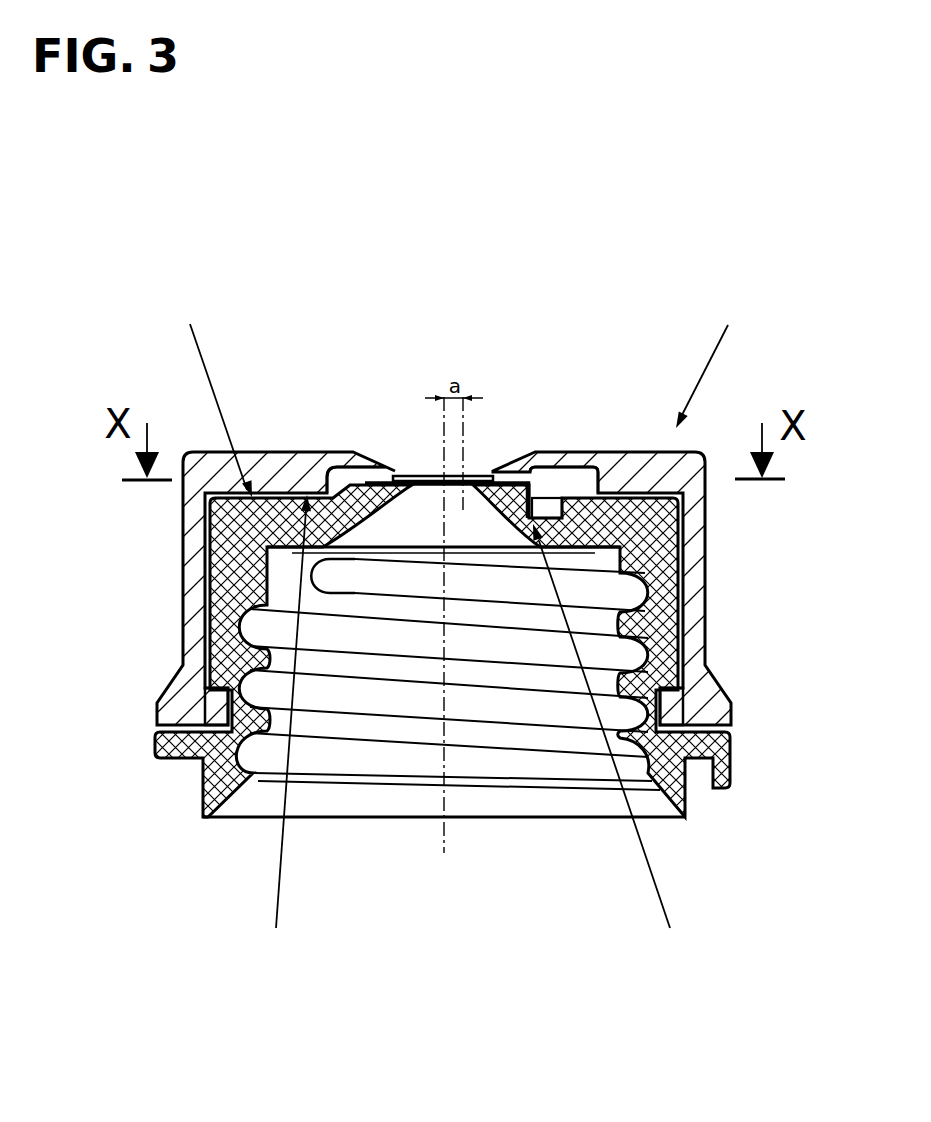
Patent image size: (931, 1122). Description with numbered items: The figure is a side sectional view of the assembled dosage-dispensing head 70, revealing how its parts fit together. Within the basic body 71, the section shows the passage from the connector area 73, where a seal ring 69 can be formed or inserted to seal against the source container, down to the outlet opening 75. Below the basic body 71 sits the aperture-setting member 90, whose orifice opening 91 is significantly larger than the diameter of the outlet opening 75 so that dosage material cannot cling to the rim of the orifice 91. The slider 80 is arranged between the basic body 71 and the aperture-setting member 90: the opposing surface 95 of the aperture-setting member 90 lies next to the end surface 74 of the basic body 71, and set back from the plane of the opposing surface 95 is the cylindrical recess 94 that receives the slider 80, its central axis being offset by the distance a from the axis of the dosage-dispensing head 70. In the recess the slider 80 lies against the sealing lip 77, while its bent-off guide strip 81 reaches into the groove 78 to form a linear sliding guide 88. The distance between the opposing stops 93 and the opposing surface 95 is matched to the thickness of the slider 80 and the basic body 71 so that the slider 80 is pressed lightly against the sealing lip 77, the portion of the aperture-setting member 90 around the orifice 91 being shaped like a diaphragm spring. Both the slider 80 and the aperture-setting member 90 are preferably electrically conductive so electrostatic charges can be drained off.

The seal ring 69 is at (606, 545).
The dosage-dispensing head 70 is at (445, 627).
The basic body 71 is at (232, 577).
The connector area 73 is at (547, 706).
The end surface 74 is at (212, 398).
The outlet opening 75 is at (453, 504).
The sealing lip 77 is at (405, 487).
The groove 78 is at (545, 512).
The slider 80 is at (378, 477).
The bent-off guide strip 81 is at (531, 491).
The linear sliding guide 88 is at (611, 740).
The aperture-setting member 90 is at (193, 600).
The orifice opening 91 is at (417, 474).
The opposing stops 93 is at (212, 708).
The cylindrical recess 94 is at (572, 487).
The opposing surface 95 is at (284, 725).